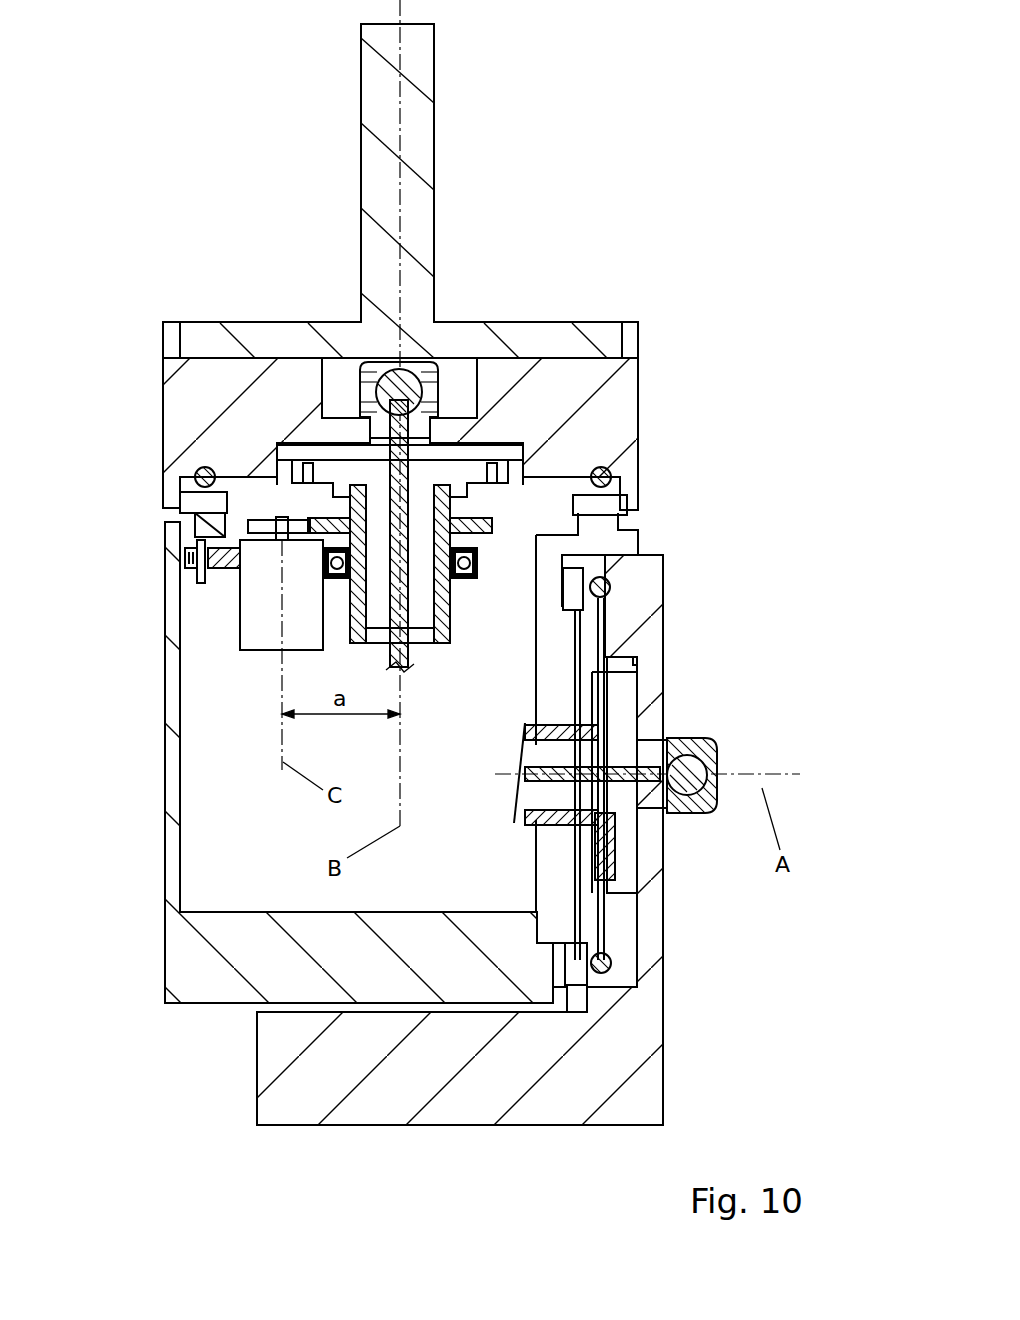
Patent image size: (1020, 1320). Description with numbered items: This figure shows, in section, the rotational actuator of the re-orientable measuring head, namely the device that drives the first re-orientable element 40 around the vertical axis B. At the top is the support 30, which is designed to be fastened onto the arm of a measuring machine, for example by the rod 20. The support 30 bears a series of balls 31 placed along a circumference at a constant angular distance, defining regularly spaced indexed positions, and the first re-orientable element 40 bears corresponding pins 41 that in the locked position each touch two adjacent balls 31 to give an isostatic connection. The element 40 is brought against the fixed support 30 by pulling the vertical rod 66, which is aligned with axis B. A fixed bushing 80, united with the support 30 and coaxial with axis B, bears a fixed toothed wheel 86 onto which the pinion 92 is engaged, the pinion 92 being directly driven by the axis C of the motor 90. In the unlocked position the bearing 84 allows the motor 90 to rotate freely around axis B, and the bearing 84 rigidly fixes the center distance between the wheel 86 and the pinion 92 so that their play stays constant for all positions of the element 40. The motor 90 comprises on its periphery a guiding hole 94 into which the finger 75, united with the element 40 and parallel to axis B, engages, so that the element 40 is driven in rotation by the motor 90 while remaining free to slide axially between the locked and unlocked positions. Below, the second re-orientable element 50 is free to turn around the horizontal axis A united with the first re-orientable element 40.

The rod 20 is at (423, 106).
The support 30 is at (617, 405).
The balls 31 is at (603, 474).
The pins 41 is at (603, 504).
The fixed toothed wheel 86 is at (493, 527).
The bearing 84 is at (569, 598).
The fixed bushing 80 is at (447, 615).
The rod 66 is at (408, 655).
The pinion 92 is at (268, 522).
The guiding hole 94 is at (186, 556).
The finger 75 is at (200, 578).
The motor 90 is at (262, 628).
The first re-orientable element 40 is at (207, 975).
The second re-orientable element 50 is at (627, 1093).